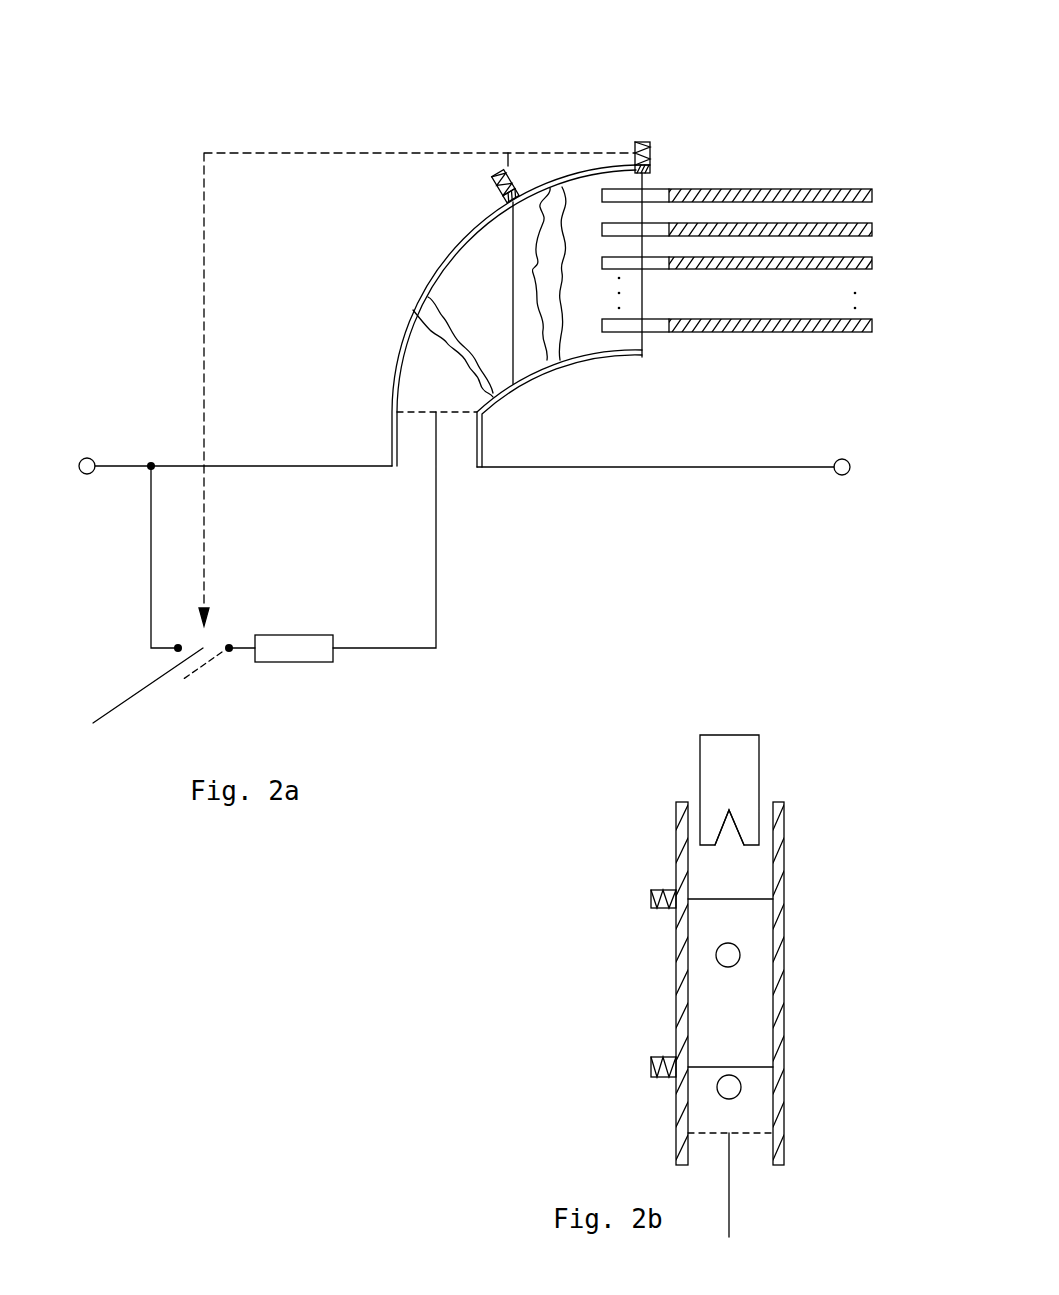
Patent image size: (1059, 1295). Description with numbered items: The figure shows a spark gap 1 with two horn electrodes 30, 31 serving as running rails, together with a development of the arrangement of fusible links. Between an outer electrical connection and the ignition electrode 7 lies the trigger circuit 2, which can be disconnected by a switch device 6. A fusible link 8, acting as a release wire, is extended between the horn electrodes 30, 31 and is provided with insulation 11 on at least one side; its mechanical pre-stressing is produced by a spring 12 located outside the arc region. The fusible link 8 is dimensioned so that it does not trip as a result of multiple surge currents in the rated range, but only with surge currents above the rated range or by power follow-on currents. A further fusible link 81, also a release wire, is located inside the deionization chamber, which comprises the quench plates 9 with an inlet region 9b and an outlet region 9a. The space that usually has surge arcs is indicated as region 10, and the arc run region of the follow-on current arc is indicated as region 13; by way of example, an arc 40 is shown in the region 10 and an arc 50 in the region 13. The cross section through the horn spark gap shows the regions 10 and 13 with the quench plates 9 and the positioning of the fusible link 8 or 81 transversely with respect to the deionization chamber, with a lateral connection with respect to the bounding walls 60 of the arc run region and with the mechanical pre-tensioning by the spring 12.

In FIG. 2A, the spark gap 1 is at (155, 310).
In FIG. 2A, the trigger circuit 2 is at (296, 650).
In FIG. 2A, the switch device 6 is at (93, 723).
In FIG. 2A, the ignition electrode 7 is at (436, 495).
In FIG. 2B, the ignition electrode 7 is at (729, 1217).
In FIG. 2A, the fusible link 8 is at (513, 333).
In FIG. 2B, the fusible link 8 is at (698, 1068).
In FIG. 2A, the quench plates 9 is at (742, 189).
In FIG. 2B, the quench plates 9 is at (738, 735).
In FIG. 2A, the outlet region 9a is at (863, 212).
In FIG. 2A, the inlet region 9b is at (630, 327).
In FIG. 2B, the inlet region 9b is at (730, 835).
In FIG. 2A, the space having surge arcs 10 is at (483, 287).
In FIG. 2B, the space having surge arcs 10 is at (730, 1105).
In FIG. 2A, the insulation 11 is at (507, 200).
In FIG. 2A, the spring 12 is at (500, 172).
In FIG. 2B, the spring 12 is at (651, 905).
In FIG. 2A, the arc run region 13 is at (578, 312).
In FIG. 2B, the arc run region 13 is at (727, 1010).
In FIG. 2A, the horn electrode 30 is at (548, 181).
In FIG. 2A, the horn electrode 31 is at (592, 362).
In FIG. 2A, the arc 40 is at (442, 320).
In FIG. 2B, the arc 40 is at (742, 1087).
In FIG. 2A, the arc 50 is at (547, 322).
In FIG. 2B, the arc 50 is at (740, 960).
In FIG. 2B, the bounding walls 60 is at (785, 1150).
In FIG. 2A, the fusible link 81 is at (643, 295).
In FIG. 2B, the fusible link 81 is at (750, 899).